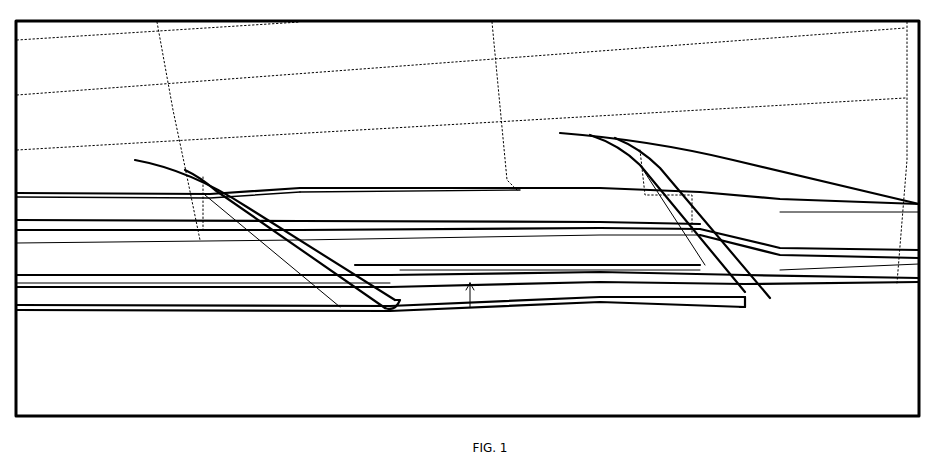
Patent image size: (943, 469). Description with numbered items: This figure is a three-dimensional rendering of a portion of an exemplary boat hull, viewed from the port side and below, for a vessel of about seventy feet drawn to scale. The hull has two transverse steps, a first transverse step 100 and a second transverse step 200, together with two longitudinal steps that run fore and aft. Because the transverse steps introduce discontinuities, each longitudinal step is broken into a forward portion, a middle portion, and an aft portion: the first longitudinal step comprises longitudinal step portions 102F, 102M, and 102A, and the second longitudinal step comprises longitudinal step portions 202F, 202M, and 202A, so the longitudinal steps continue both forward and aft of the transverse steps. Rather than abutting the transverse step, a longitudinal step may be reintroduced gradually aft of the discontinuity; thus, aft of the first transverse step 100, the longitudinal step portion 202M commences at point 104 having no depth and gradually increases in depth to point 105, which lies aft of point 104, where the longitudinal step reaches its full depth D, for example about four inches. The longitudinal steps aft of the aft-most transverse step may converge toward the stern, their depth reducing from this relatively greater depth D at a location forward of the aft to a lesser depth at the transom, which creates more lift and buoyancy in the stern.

The first transverse step 100 is at (267, 212).
The forward longitudinal step portion 102F is at (158, 193).
The middle longitudinal step portion 102M is at (500, 195).
The aft longitudinal step portion 102A is at (739, 167).
The forward longitudinal step portion 202F is at (203, 279).
The middle longitudinal step portion 202M is at (567, 230).
The aft longitudinal step portion 202A is at (809, 206).
The point of zero depth 104 is at (396, 252).
The point of full depth 105 is at (560, 251).
The second transverse step 200 is at (702, 222).
The depth D is at (493, 297).